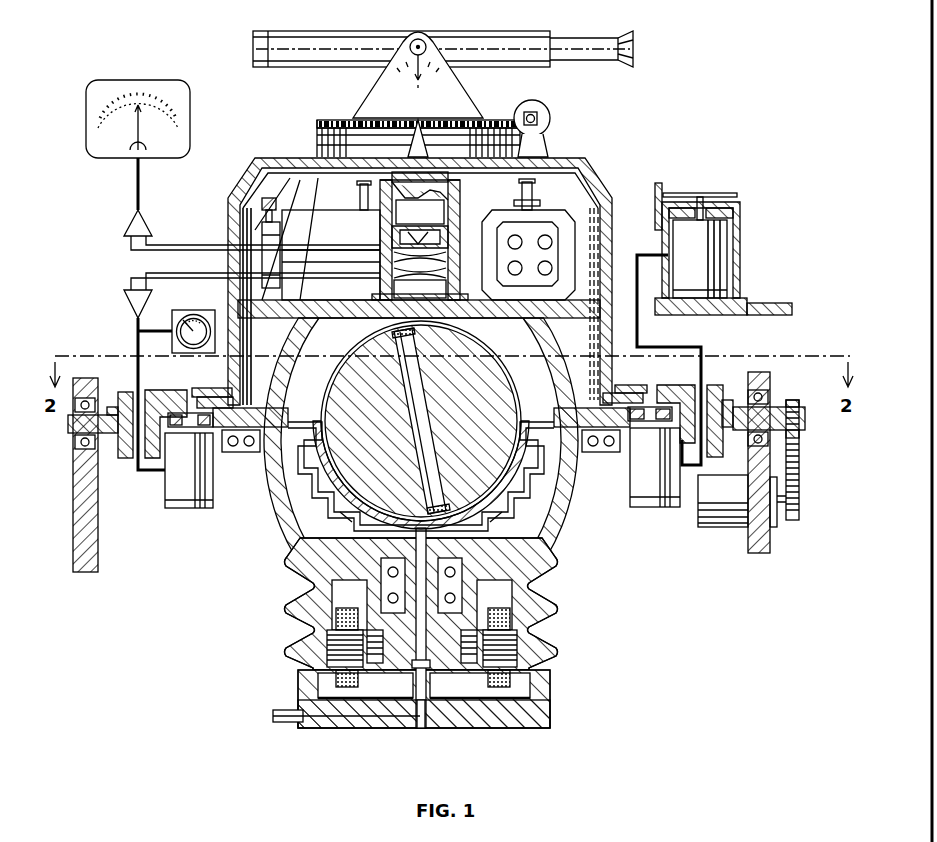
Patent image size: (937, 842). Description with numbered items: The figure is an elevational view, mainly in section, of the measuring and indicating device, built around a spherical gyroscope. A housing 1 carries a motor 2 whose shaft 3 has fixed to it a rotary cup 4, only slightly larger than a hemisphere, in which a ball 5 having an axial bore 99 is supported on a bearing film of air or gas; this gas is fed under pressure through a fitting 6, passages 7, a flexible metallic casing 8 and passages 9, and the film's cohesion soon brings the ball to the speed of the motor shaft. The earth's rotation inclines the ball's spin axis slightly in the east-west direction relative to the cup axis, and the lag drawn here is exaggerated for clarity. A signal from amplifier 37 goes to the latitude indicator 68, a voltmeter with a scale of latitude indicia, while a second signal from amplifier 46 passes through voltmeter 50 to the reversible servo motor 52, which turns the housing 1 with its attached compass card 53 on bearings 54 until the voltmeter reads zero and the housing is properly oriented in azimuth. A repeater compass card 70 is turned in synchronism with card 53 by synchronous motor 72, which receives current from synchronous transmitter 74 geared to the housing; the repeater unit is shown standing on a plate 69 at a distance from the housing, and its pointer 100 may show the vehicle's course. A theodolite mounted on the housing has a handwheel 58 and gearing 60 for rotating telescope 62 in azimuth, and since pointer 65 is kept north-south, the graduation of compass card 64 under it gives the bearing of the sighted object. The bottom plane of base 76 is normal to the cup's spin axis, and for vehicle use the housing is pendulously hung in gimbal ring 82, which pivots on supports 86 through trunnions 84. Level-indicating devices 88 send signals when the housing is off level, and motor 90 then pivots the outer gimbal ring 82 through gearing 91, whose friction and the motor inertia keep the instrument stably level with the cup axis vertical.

The housing 1 is at (283, 495).
The motor 2 is at (355, 653).
The shaft 3 is at (489, 653).
The rotary cup 4 is at (325, 423).
The ball 5 is at (421, 421).
The fitting 6 is at (282, 713).
The passages 7 is at (380, 508).
The flexible metallic casing 8 is at (312, 516).
The passages 9 is at (343, 460).
The amplifier 37 is at (127, 226).
The amplifier 46 is at (128, 304).
The voltmeter 50 is at (186, 312).
The reversible servo motor 52 is at (189, 470).
The compass card 53 is at (628, 386).
The bearings 54 is at (228, 452).
The handwheel 58 is at (544, 114).
The gearing 60 is at (320, 122).
The telescope 62 is at (302, 42).
The compass card 64 is at (338, 118).
The pointer 65 is at (421, 125).
The latitude indicator 68 is at (150, 159).
The base plate 69 is at (762, 306).
The compass card 70 is at (708, 194).
The synchronous motor 72 is at (701, 250).
The synchronous transmitter 74 is at (655, 467).
The base 76 is at (440, 728).
The gimbal ring 82 is at (126, 390).
The trunnions 84 is at (100, 435).
The supports 86 is at (76, 482).
The level-indicating devices 88 is at (495, 222).
The motor 90 is at (742, 501).
The gearing 91 is at (792, 480).
The axial bore 99 is at (427, 419).
The pointer 100 is at (654, 213).